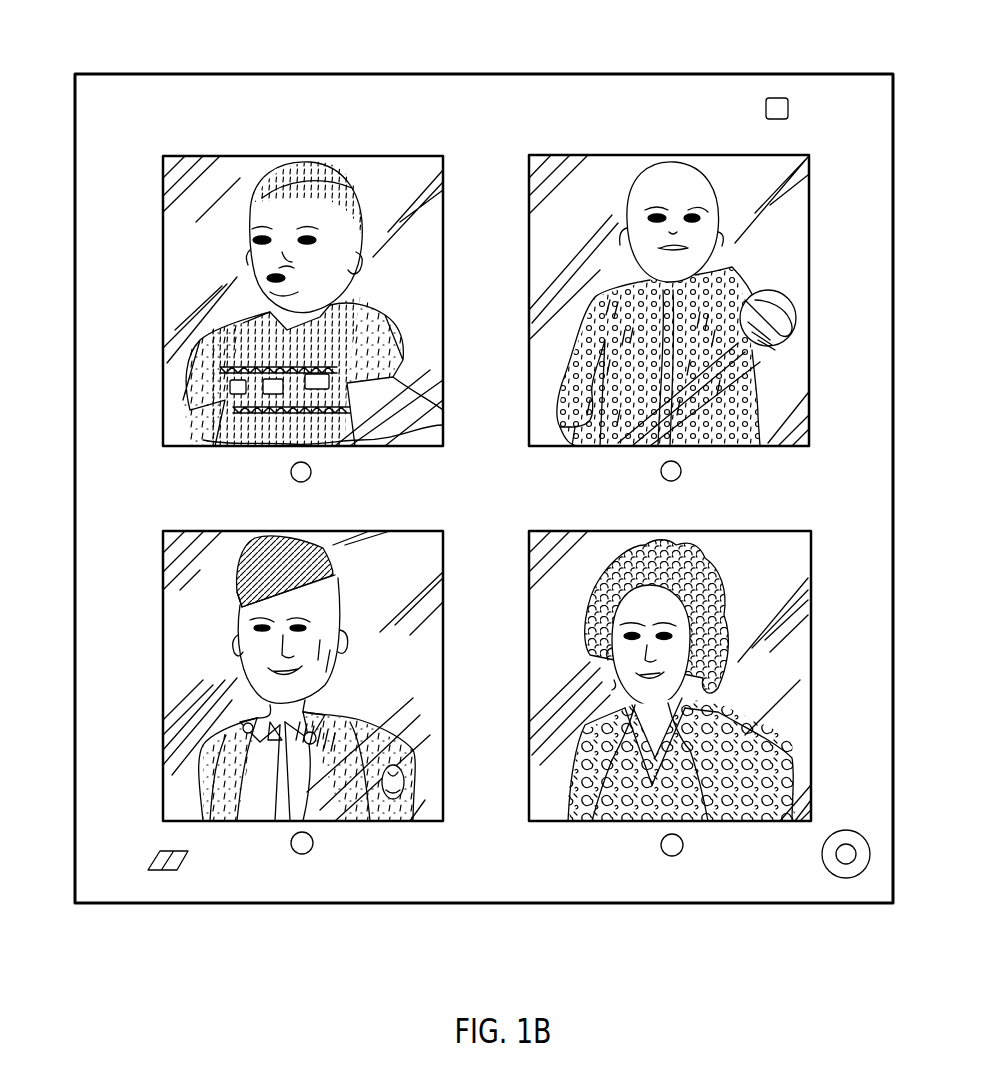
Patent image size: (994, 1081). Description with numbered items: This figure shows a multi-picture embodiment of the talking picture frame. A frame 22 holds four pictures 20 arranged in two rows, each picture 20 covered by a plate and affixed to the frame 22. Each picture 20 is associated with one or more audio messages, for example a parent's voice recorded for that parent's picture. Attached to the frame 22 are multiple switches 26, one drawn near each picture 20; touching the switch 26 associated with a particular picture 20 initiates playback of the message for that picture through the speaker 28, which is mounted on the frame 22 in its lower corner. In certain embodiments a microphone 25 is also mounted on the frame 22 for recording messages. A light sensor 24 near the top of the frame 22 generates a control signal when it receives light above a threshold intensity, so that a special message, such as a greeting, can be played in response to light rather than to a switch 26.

The pictures 20 is at (226, 189).
The frame 22 is at (867, 118).
The light sensor 24 is at (778, 98).
The microphone 25 is at (150, 870).
The switches 26 is at (291, 472).
The speaker 28 is at (833, 877).